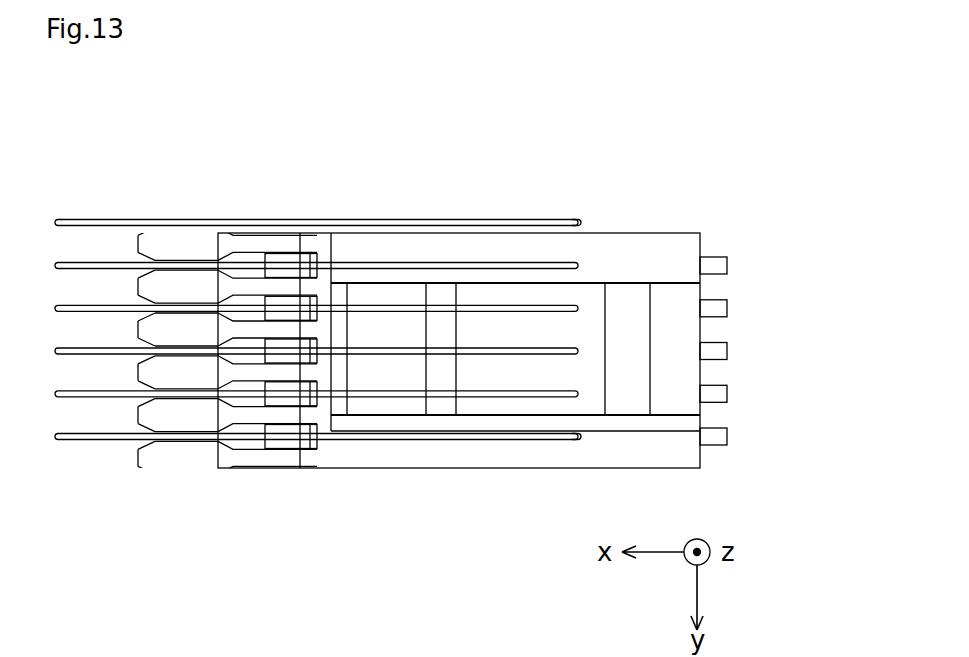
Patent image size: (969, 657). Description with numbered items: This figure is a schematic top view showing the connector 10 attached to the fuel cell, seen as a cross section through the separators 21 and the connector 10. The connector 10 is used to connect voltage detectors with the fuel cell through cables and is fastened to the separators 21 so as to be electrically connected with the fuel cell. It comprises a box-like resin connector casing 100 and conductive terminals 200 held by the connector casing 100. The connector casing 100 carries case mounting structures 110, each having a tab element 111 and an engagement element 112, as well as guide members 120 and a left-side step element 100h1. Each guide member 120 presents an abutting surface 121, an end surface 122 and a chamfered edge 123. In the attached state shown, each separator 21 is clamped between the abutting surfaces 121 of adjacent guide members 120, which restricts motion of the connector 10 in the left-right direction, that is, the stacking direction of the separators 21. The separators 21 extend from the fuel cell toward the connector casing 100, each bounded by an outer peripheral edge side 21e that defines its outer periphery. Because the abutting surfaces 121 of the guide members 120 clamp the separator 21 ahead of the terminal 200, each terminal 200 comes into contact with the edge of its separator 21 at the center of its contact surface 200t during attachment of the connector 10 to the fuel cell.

The connector 10 is at (695, 119).
The connector casing 100 is at (691, 233).
The case mounting structure 110 is at (541, 302).
The tab element 111 is at (675, 302).
The engagement element 112 is at (438, 300).
The guide member 120 is at (188, 243).
The abutting surface 121 is at (167, 254).
The end surface 122 is at (140, 243).
The chamfered edge 123 is at (150, 259).
The terminal 200 is at (728, 266).
The contact surface 200t is at (288, 258).
The separator 21 is at (363, 226).
The outer peripheral edge side 21e is at (580, 226).
The left-side step element 100h1 is at (457, 453).